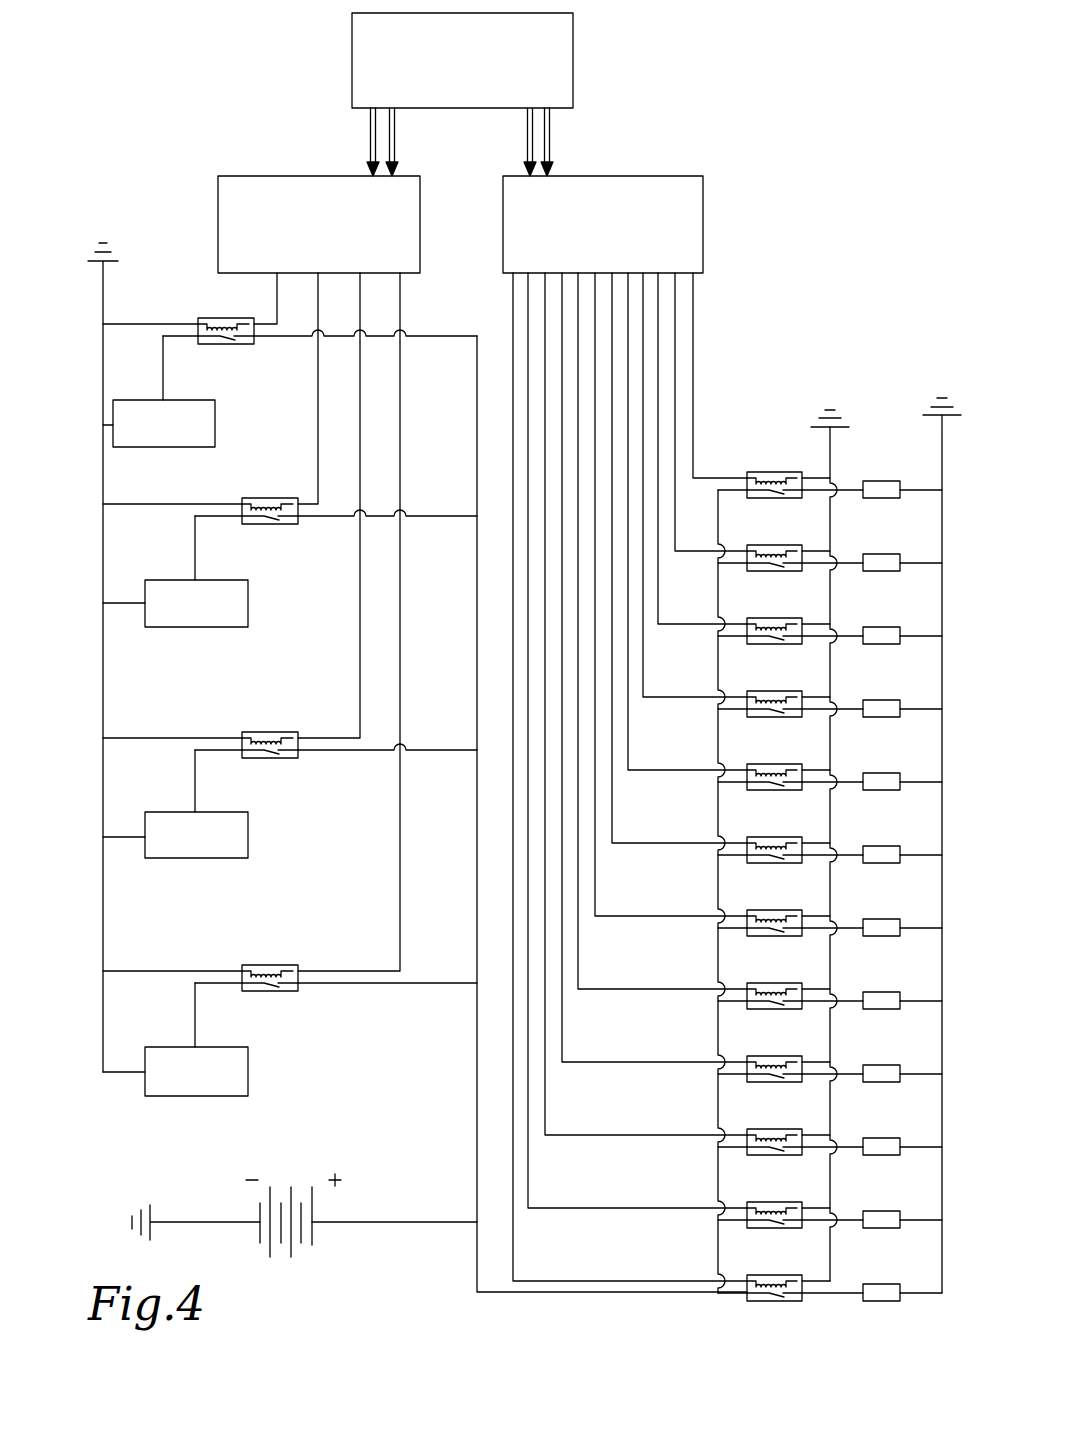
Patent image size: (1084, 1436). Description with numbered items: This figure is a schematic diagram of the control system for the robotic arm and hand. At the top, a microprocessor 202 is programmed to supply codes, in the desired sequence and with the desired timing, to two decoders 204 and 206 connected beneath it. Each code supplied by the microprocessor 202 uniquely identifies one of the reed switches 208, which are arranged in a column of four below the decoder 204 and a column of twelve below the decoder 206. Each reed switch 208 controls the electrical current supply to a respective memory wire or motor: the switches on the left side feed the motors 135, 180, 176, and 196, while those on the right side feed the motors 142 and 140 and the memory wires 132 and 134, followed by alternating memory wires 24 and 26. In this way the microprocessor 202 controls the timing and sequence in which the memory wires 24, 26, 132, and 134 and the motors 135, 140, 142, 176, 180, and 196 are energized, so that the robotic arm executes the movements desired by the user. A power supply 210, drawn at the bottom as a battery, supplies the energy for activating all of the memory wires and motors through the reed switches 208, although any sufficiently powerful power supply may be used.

The microprocessor 202 is at (573, 48).
The decoder 204 is at (265, 176).
The decoder 206 is at (600, 176).
The reed switch 208 is at (236, 347).
The power supply 210 is at (313, 1243).
The motor 135 is at (193, 447).
The motor 180 is at (224, 627).
The motor 176 is at (224, 858).
The motor 196 is at (226, 1096).
The motor 142 is at (896, 498).
The motor 140 is at (896, 571).
The memory wire 132 is at (896, 644).
The memory wire 134 is at (896, 717).
The memory wire 24 is at (884, 790).
The memory wire 26 is at (884, 863).